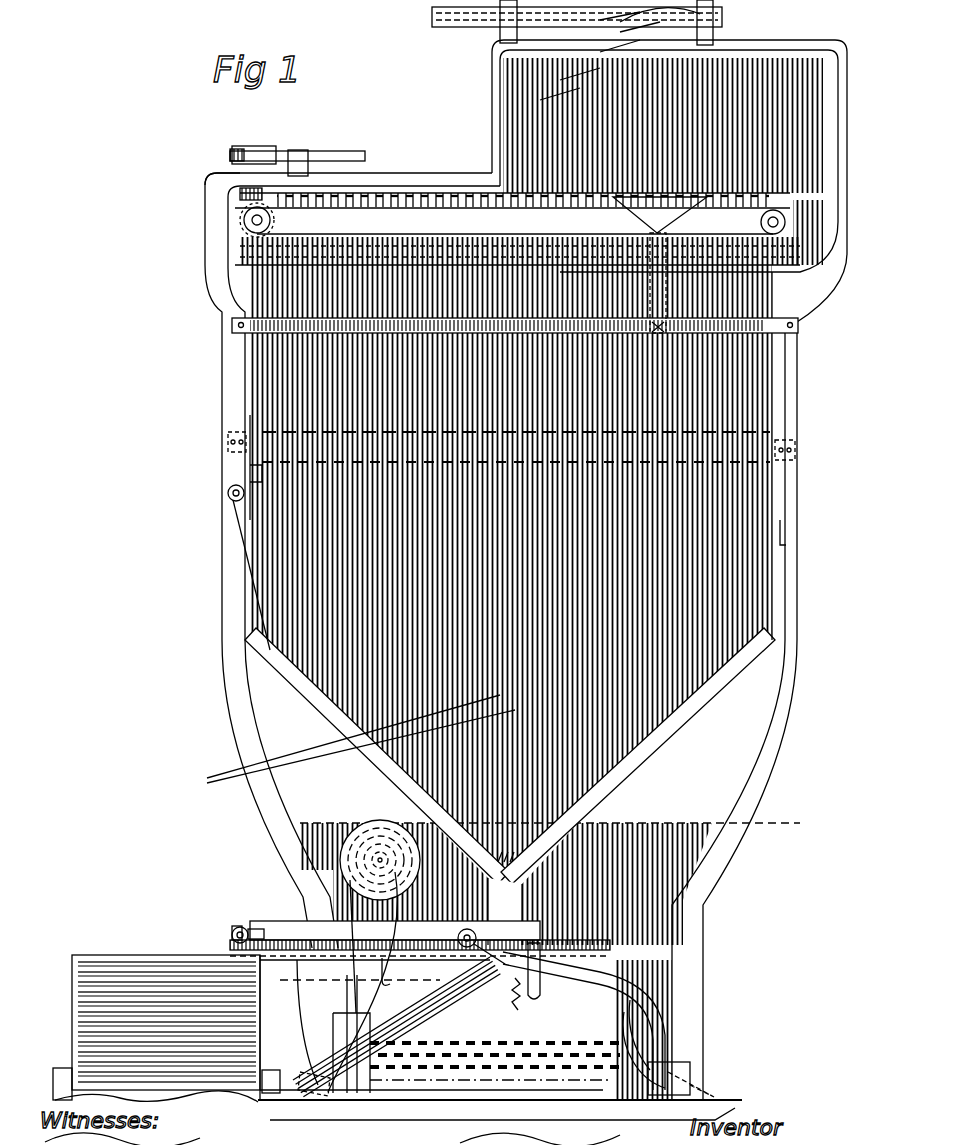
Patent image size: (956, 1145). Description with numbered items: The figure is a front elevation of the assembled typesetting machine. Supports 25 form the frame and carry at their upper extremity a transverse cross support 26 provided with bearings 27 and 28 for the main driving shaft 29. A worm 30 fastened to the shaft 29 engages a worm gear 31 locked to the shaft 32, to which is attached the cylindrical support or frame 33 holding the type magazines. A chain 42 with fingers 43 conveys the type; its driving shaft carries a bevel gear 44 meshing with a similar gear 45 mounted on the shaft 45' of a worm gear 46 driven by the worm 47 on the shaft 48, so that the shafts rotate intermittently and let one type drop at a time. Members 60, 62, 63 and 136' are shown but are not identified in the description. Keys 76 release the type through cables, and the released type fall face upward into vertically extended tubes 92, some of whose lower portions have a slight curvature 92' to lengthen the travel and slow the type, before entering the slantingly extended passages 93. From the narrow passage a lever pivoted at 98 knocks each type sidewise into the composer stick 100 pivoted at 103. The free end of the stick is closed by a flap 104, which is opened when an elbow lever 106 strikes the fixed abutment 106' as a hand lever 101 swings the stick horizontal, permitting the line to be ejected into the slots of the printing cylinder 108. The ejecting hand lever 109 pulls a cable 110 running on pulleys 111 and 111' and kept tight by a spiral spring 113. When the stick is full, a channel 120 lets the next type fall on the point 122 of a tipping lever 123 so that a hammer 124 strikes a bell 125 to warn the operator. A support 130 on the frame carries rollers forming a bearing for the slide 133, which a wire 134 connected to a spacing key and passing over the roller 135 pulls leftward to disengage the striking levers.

The supports 25 is at (228, 348).
The transverse cross support 26 is at (497, 148).
The bearing 27 is at (600, 20).
The bearing 28 is at (715, 38).
The main driving shaft 29 is at (445, 18).
The worm 30 is at (600, 52).
The worm gear 31 is at (620, 32).
The shaft 32 is at (540, 100).
The cylindrical support or frame 33 is at (560, 80).
The chain 42 is at (357, 200).
The fingers 43 is at (323, 193).
The bevel gear 44 is at (240, 232).
The bevel gear 45 is at (210, 205).
The shaft 45' is at (205, 180).
The worm gear 46 is at (230, 155).
The worm 47 is at (250, 146).
The shaft 48 is at (323, 148).
The belt 60 is at (262, 260).
The hanger 62 is at (267, 340).
The damper rail 63 is at (252, 318).
The keys 76 is at (522, 1055).
The vertically extended tubes 92 is at (485, 605).
The curvature 92' is at (345, 744).
The slantingly extended passages 93 is at (265, 672).
The pivot 98 is at (515, 1000).
The composer stick 100 is at (470, 1005).
The hand lever 101 is at (350, 993).
The pivot 103 is at (490, 965).
The flap 104 is at (300, 1095).
The elbow lever 106 is at (347, 1008).
The fixed abutment 106' is at (360, 981).
The printing cylinder 108 is at (125, 945).
The hand lever 109 is at (540, 985).
The cable 110 is at (248, 927).
The pulley 111 is at (209, 939).
The pulley 111' is at (508, 867).
The spiral spring 113 is at (378, 820).
The channel 120 is at (607, 980).
The point 122 is at (713, 1097).
The tipping lever 123 is at (673, 1068).
The hammer 124 is at (665, 1057).
The bell 125 is at (637, 1030).
The support 130 is at (248, 432).
The slide 133 is at (250, 470).
The wire 134 is at (242, 537).
The roller 135 is at (228, 494).
The bracket 136' is at (811, 492).